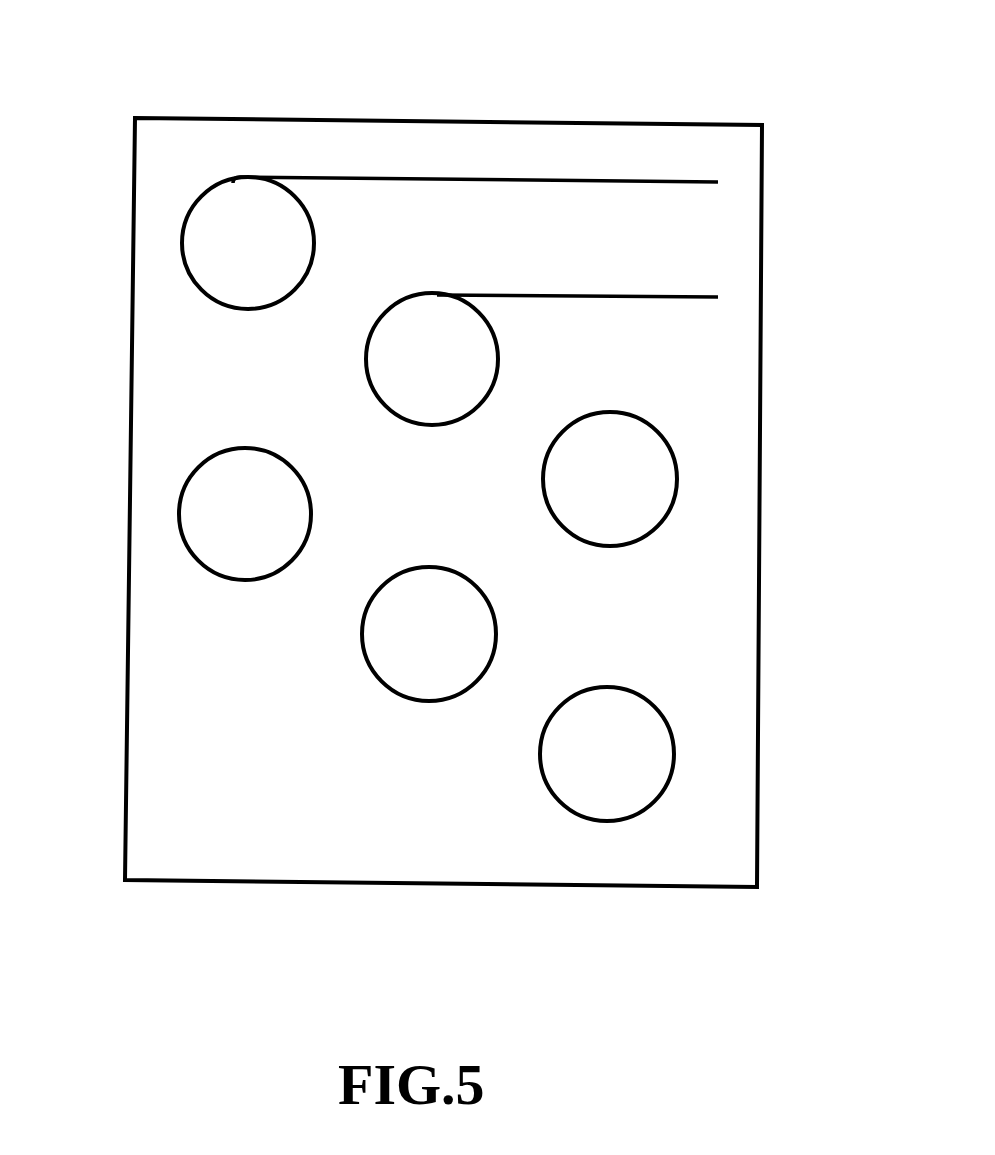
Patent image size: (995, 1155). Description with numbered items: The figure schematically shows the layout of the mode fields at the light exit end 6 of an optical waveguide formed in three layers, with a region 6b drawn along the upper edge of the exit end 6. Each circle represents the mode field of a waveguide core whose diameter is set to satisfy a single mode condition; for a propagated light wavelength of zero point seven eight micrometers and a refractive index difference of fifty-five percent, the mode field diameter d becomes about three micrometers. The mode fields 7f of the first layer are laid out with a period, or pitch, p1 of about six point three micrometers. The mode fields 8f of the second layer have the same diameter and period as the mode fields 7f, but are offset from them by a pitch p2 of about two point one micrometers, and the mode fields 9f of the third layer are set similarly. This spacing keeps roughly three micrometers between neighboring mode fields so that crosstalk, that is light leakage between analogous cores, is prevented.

The light exit end of the optical waveguide 6 is at (555, 125).
The edge region of substrate 6b is at (413, 145).
The mode field of the first layer 7f is at (190, 286).
The mode field of the second layer 8f is at (480, 410).
The mode field of the third layer 9f is at (666, 520).
The mode field diameter d is at (248, 180).
The pitch of the mode field layout p1 is at (273, 180).
The pitch between the mode fields of adjacent layers p2 is at (648, 185).